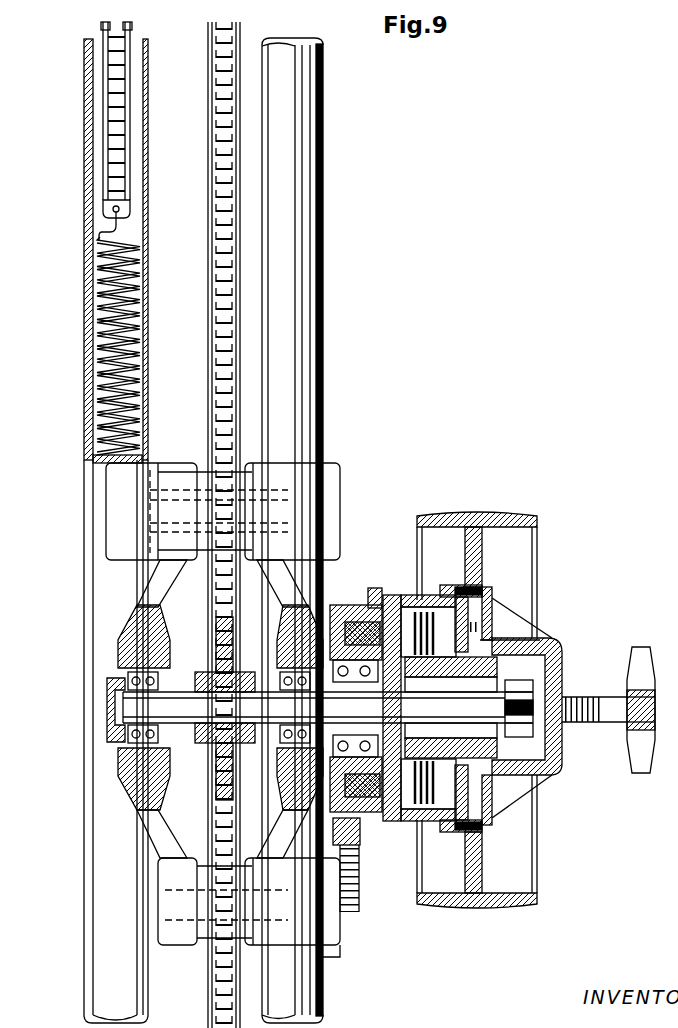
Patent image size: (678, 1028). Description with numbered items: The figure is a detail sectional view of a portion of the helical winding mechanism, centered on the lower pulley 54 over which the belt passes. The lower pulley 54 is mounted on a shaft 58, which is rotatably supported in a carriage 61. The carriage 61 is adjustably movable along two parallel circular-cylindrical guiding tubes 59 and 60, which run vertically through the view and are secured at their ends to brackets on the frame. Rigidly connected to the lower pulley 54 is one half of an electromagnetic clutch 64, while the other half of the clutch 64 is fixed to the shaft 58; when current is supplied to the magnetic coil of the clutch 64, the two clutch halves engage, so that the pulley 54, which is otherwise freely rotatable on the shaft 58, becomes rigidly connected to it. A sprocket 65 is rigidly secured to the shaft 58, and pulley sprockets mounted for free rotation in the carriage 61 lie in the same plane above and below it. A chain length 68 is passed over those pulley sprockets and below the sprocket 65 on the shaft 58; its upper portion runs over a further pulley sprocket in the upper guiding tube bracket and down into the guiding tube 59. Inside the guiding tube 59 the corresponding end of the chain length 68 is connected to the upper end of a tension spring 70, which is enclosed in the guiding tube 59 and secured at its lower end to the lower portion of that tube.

The lower pulley 54 is at (450, 512).
The shaft 58 is at (188, 718).
The guiding tube 59 is at (87, 187).
The guiding tube 60 is at (298, 310).
The carriage 61 is at (315, 502).
The electromagnetic clutch 64 is at (393, 590).
The sprocket 65 is at (218, 627).
The chain length 68 is at (212, 265).
The tension spring 70 is at (97, 311).